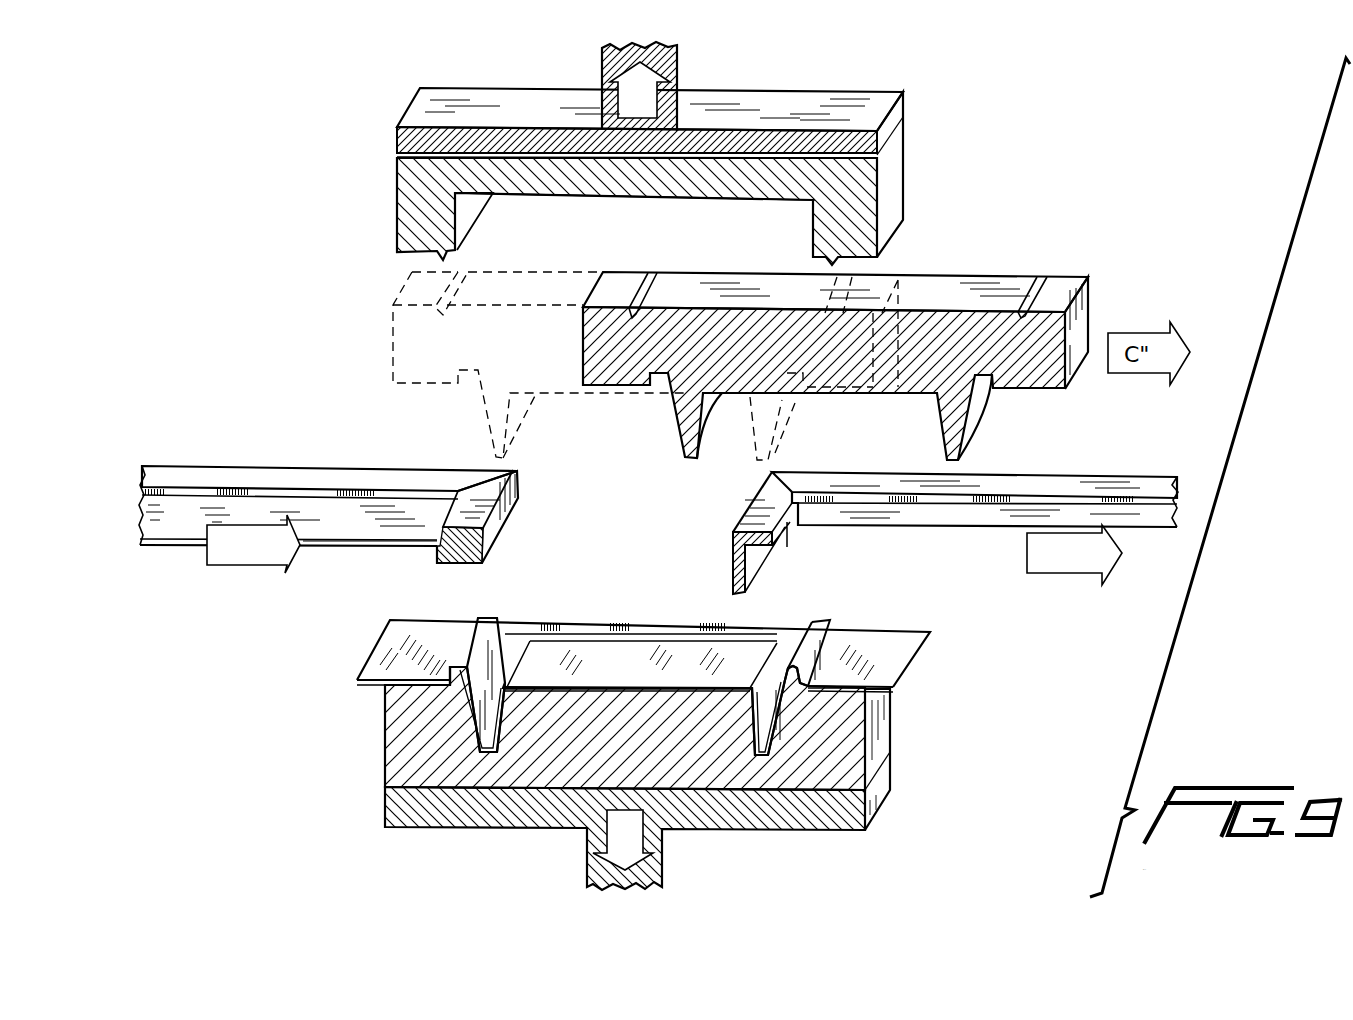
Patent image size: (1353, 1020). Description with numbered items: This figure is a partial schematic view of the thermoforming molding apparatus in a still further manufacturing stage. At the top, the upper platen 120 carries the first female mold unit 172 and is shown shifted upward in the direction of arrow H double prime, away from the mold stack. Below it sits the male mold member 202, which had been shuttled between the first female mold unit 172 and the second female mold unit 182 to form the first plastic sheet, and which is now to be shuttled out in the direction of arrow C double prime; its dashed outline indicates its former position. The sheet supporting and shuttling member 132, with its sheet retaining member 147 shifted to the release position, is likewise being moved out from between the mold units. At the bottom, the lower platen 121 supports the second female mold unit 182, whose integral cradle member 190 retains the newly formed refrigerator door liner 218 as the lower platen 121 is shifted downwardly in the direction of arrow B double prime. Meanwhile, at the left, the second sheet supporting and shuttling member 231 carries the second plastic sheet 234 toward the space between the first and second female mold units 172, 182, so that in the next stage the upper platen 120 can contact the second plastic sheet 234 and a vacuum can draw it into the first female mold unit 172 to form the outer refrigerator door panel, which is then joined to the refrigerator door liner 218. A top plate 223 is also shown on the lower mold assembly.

The upper platen 120 is at (703, 153).
The first female mold unit 172 is at (908, 167).
The male mold member 202 is at (1089, 268).
The second sheet supporting and shuttling member 231 is at (328, 506).
The second plastic sheet 234 is at (335, 528).
The sheet supporting and shuttling member 132 is at (955, 505).
The sheet retaining member 147 is at (765, 570).
The refrigerator door liner 218 is at (648, 622).
The top plate 223 is at (857, 655).
The second female mold unit 182 is at (694, 730).
The cradle member 190 is at (625, 728).
The lower platen 121 is at (717, 812).